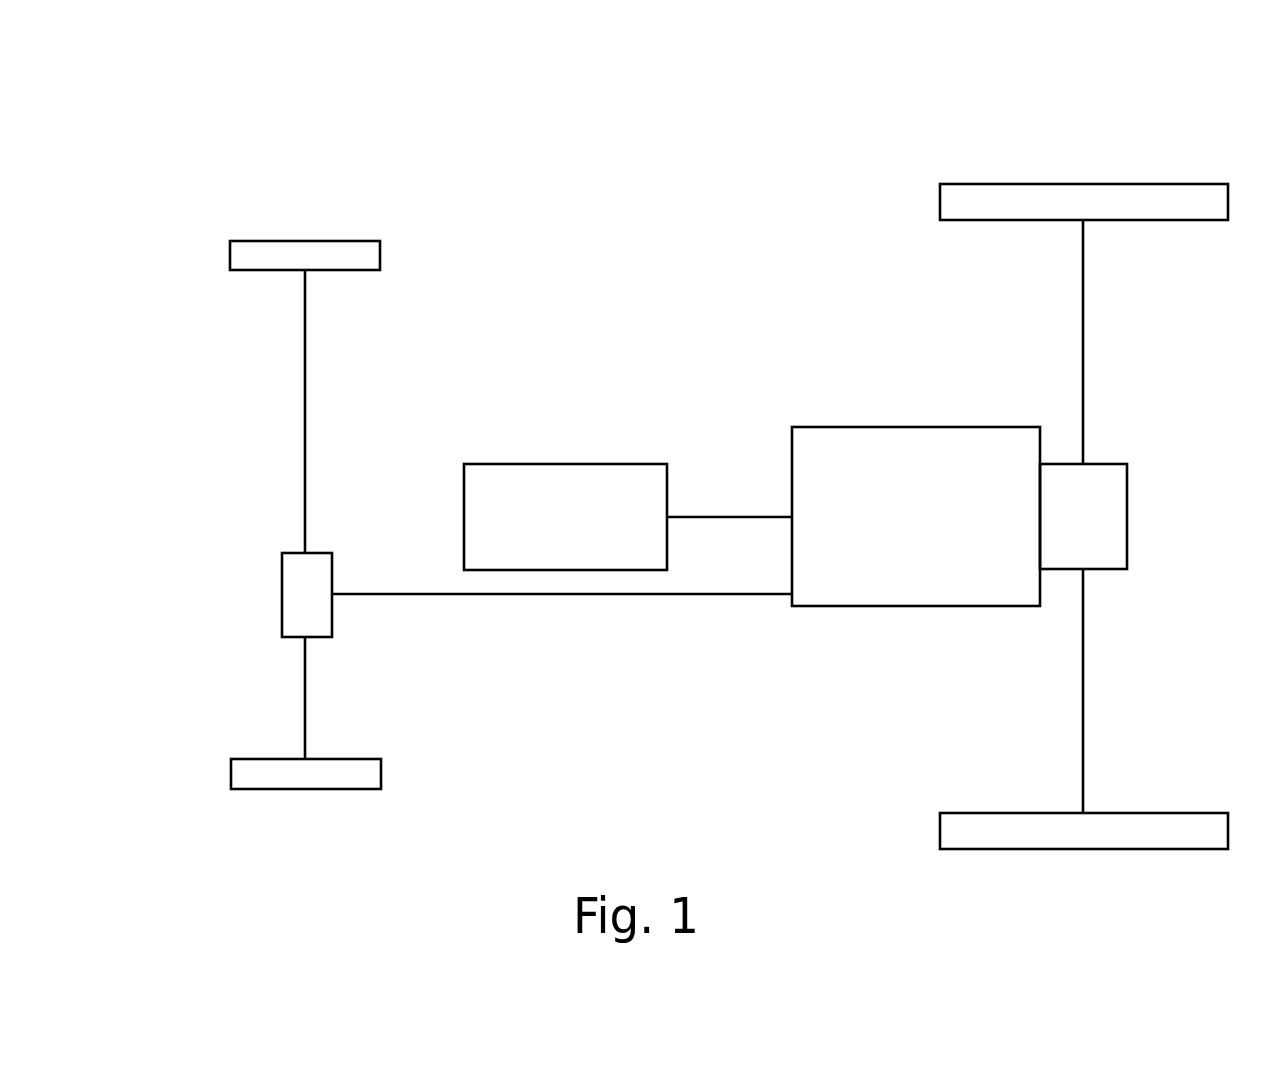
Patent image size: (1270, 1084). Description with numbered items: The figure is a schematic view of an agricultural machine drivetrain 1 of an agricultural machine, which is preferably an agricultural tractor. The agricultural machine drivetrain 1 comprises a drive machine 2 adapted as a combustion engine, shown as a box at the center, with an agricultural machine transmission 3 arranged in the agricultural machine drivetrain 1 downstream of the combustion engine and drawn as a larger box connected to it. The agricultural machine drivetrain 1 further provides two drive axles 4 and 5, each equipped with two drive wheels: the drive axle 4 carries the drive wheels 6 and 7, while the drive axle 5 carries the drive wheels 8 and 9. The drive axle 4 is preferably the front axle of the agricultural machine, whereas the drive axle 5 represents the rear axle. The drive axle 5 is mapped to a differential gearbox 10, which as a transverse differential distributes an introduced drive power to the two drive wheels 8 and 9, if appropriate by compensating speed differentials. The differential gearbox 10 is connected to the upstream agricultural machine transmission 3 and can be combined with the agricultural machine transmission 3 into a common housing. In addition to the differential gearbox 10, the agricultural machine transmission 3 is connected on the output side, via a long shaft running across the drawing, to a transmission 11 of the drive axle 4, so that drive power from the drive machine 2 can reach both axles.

The agricultural machine drivetrain 1 is at (230, 132).
The drive machine 2 is at (575, 494).
The agricultural machine transmission 3 is at (832, 425).
The drive axle 4 is at (303, 380).
The drive axle 5 is at (1085, 307).
The drive wheel 6 is at (362, 252).
The drive wheel 7 is at (287, 773).
The drive wheel 8 is at (1124, 203).
The drive wheel 9 is at (1035, 825).
The differential gearbox 10 is at (1128, 507).
The transmission 11 is at (292, 618).